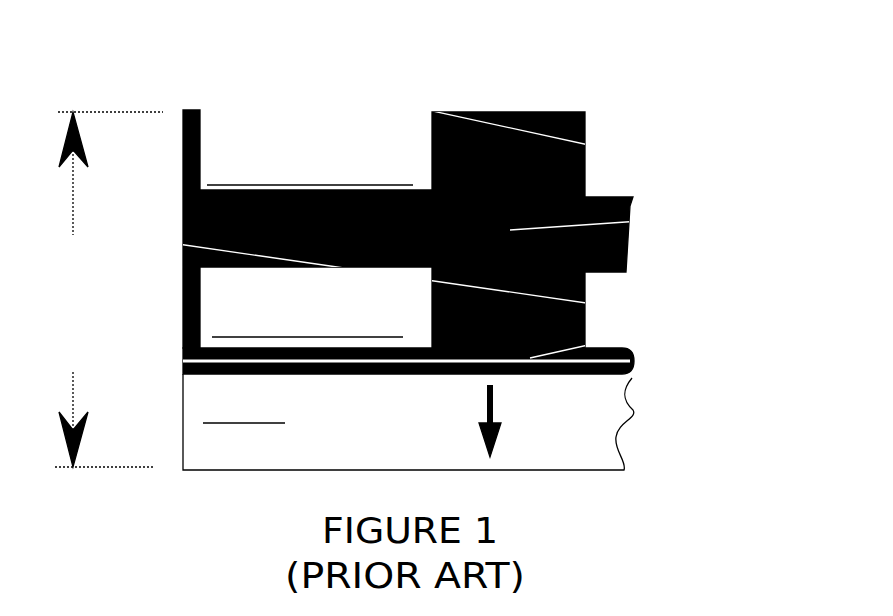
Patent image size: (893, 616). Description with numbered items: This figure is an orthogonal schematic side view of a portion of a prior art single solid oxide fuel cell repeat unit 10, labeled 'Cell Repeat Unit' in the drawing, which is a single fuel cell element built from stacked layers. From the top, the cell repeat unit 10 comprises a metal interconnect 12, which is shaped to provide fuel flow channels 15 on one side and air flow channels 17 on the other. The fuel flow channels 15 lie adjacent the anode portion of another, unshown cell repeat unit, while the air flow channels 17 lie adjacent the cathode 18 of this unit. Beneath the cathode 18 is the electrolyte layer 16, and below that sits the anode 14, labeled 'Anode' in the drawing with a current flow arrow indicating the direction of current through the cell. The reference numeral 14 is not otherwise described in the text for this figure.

The cell repeat unit 10 is at (427, 288).
The metal interconnect 12 is at (510, 230).
The anode 14 is at (580, 431).
The fuel flow channels 15 is at (598, 147).
The electrolyte layer 16 is at (628, 378).
The air flow channels 17 is at (600, 305).
The cathode 18 is at (530, 358).